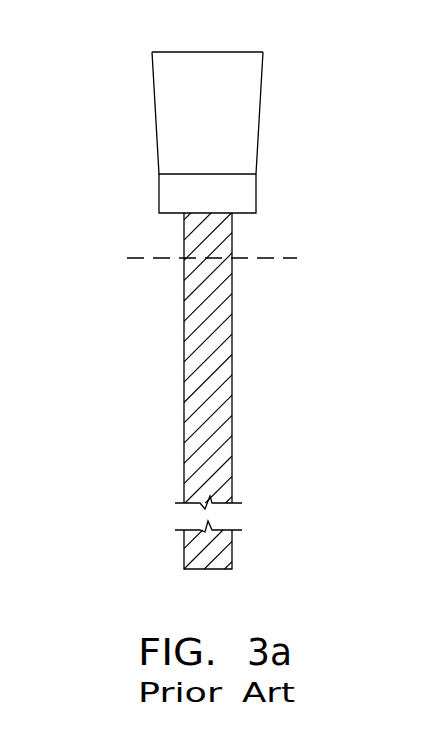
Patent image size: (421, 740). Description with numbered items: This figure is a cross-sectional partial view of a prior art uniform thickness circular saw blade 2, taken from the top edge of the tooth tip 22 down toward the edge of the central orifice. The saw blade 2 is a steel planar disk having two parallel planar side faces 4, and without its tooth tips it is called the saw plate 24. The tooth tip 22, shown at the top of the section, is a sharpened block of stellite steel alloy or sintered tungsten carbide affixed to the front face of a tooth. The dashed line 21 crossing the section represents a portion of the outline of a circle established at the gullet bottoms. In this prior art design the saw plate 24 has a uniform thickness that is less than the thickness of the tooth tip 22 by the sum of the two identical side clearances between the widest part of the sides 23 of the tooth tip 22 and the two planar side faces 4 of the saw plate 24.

The saw blade 2 is at (84, 440).
The planar side faces 4 is at (232, 301).
The dashed line 21 is at (277, 259).
The tooth tip 22 is at (243, 129).
The sides of the tooth tips 23 is at (264, 52).
The saw plate 24 is at (213, 400).